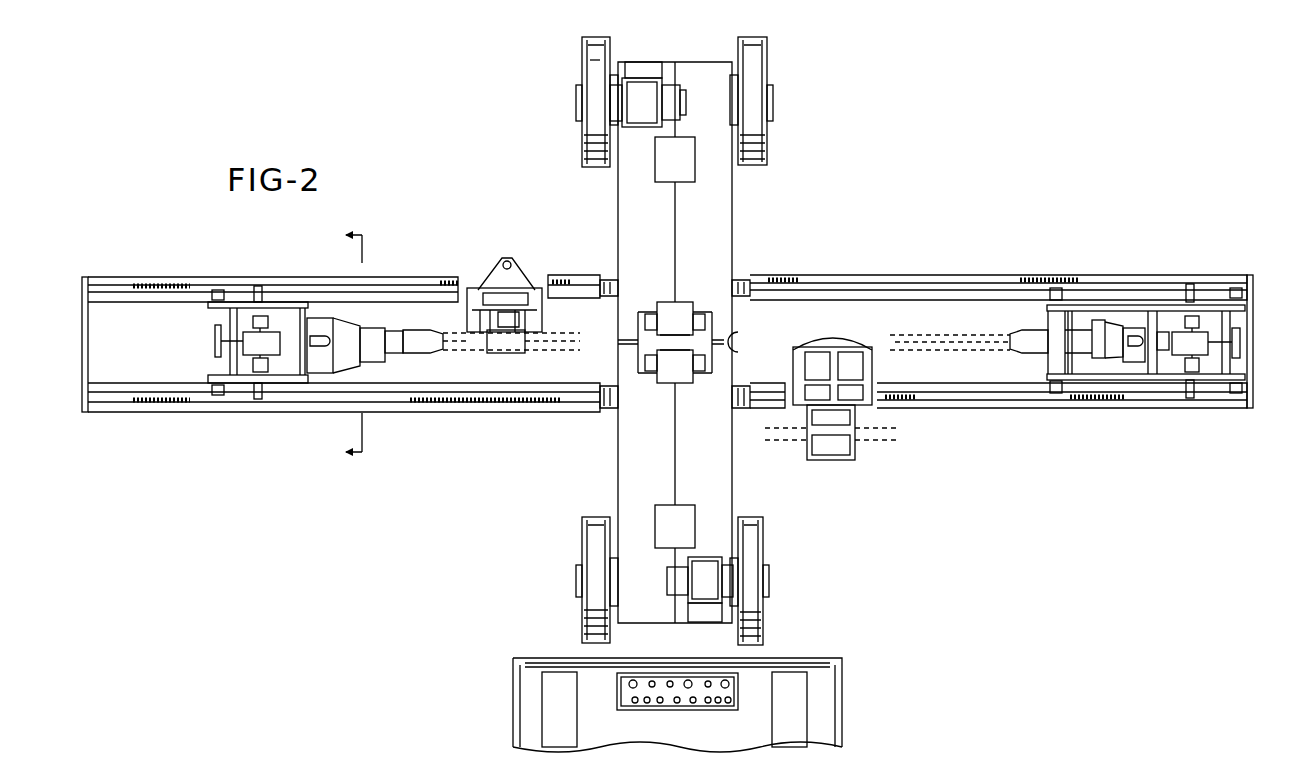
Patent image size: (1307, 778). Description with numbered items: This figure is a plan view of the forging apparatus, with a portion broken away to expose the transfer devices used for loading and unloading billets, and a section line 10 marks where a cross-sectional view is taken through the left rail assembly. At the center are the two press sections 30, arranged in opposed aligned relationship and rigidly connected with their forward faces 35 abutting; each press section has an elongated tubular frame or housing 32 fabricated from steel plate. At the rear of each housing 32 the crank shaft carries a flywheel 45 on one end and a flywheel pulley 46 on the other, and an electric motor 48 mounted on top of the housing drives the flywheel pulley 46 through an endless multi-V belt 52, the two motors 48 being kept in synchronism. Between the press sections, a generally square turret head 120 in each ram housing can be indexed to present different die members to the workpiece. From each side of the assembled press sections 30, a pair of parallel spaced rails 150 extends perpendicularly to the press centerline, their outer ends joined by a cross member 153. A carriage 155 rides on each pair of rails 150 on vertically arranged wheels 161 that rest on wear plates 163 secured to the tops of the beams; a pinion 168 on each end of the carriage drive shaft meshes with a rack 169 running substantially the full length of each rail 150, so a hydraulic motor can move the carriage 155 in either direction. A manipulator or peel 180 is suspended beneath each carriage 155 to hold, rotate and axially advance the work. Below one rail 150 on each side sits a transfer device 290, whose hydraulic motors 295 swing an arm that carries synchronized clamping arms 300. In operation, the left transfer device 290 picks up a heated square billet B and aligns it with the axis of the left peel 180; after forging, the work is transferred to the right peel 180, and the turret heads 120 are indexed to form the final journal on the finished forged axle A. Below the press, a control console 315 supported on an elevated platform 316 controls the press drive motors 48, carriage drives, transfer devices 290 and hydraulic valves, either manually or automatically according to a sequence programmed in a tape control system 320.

The section line 10 is at (370, 347).
The press section 30 is at (734, 216).
The tubular frame or housing 32 is at (723, 235).
The forward face 35 is at (748, 343).
The flywheel 45 is at (755, 52).
The flywheel pulley 46 is at (583, 52).
The electric motor 48 is at (644, 90).
The endless multi-V belt 52 is at (597, 82).
The turret head 120 is at (683, 310).
The rails 150 is at (118, 283).
The cross member 153 is at (85, 330).
The carriage 155 is at (303, 315).
The wheels 161 is at (215, 292).
The wear plates 163 is at (580, 290).
The pinion 168 is at (258, 290).
The rack 169 is at (450, 275).
The manipulator or peel 180 is at (420, 360).
The transfer device 290 is at (530, 268).
The hydraulic motor 295 is at (812, 358).
The clamping arms 300 is at (503, 345).
The control console 315 is at (655, 700).
The elevated platform 316 is at (820, 710).
The tape control system 320 is at (547, 700).
The forged axle A is at (940, 340).
The billet B is at (553, 346).